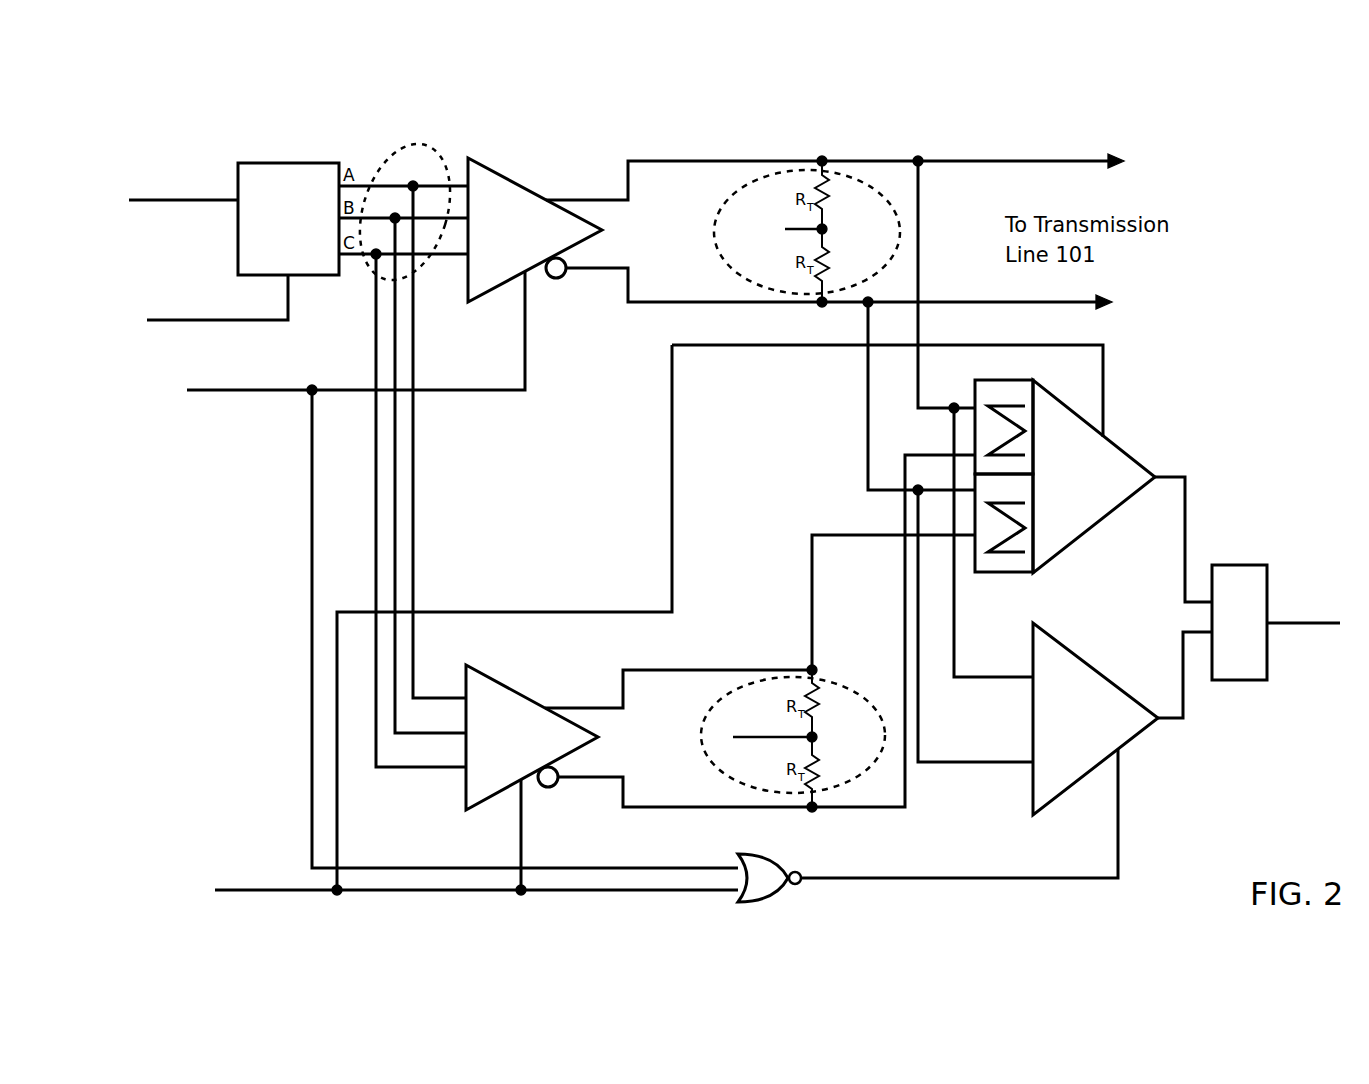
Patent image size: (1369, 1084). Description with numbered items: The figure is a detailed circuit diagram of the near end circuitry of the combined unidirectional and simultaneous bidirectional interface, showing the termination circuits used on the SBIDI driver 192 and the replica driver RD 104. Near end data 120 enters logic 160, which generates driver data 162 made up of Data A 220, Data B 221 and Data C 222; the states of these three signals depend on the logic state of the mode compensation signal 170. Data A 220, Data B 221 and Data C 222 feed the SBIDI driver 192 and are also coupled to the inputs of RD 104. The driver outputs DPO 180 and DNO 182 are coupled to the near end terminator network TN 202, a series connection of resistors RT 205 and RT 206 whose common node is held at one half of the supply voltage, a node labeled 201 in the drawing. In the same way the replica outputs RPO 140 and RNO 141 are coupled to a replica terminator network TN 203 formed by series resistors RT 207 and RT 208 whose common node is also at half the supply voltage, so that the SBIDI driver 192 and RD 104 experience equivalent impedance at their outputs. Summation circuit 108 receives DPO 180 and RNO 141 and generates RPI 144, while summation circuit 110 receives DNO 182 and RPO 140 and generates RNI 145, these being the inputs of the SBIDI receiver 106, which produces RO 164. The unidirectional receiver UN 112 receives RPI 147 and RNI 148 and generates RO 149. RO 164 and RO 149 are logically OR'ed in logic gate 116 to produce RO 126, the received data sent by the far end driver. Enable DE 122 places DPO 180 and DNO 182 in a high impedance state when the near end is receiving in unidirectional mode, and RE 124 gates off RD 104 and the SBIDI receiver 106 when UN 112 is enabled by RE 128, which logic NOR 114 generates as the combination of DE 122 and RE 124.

The near end data 120 is at (185, 162).
The logic 160 is at (275, 163).
The driver data 162 is at (433, 148).
The SBIDI driver 192 is at (503, 172).
The DPO 180 is at (587, 198).
The DNO 182 is at (602, 274).
The resistor RT 205 is at (830, 203).
The resistor RT 206 is at (828, 272).
The near end terminator network 202 is at (727, 203).
The VDD/2 reference node 201 is at (743, 249).
The mode compensation signal 170 is at (293, 302).
The DE 122 is at (258, 395).
The RE 124 is at (222, 868).
The Data A 220 is at (415, 457).
The Data B 221 is at (396, 522).
The Data C 222 is at (375, 567).
The logic NOR 114 is at (760, 905).
The RE 128 is at (1118, 835).
The RD 104 is at (502, 670).
The RPO 140 is at (643, 672).
The RNO 141 is at (643, 808).
The resistor RT 207 is at (818, 703).
The resistor RT 208 is at (827, 760).
The replica near end terminator network 203 is at (710, 707).
The summation circuit 108 is at (980, 380).
The summation circuit 110 is at (993, 578).
The SBIDI receiver 106 is at (1115, 440).
The RPI 144 is at (1055, 423).
The RNI 145 is at (1050, 538).
The RO 164 is at (1185, 512).
The logic gate 116 is at (1240, 565).
The RO 126 is at (1290, 632).
The UN 112 is at (1072, 655).
The RPI 147 is at (990, 678).
The RNI 148 is at (980, 765).
The RO 149 is at (1195, 712).